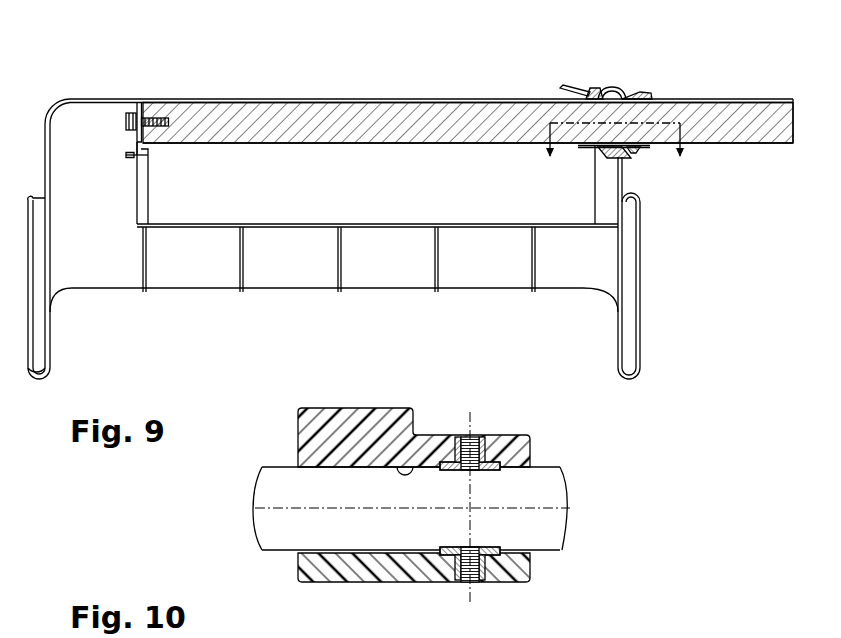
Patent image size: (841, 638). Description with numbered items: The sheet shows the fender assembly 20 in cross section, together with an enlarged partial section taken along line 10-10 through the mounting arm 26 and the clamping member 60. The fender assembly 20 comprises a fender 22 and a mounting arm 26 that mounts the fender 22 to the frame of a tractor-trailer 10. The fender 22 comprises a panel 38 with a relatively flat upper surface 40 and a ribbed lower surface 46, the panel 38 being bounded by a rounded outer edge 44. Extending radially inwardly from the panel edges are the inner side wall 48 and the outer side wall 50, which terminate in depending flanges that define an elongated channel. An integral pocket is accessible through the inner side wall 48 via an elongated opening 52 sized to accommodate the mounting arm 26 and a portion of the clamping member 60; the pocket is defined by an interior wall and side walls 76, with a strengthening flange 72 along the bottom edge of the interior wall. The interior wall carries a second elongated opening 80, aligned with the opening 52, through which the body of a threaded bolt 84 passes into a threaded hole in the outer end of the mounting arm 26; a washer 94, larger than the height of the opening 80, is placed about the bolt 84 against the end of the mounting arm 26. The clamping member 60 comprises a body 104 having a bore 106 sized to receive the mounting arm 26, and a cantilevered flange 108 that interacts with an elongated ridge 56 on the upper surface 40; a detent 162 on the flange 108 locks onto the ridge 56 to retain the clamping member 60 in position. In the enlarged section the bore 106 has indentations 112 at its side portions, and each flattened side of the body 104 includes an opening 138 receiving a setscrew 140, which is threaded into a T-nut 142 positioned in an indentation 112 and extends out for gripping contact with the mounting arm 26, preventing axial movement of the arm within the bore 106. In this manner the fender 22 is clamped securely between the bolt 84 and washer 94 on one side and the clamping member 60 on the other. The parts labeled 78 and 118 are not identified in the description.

In FIG. 9, the tractor-trailer 10 is at (614, 149).
In FIG. 9, the fender assembly 20 is at (642, 305).
In FIG. 9, the fender 22 is at (473, 97).
In FIG. 9, the mounting arm 26 is at (731, 107).
In FIG. 10, the mounting arm 26 is at (551, 533).
In FIG. 9, the panel 38 is at (369, 97).
In FIG. 9, the upper surface 40 is at (419, 97).
In FIG. 9, the outer edge 44 is at (48, 118).
In FIG. 9, the lower surface 46 is at (195, 258).
In FIG. 9, the inner side wall 48 is at (623, 172).
In FIG. 9, the outer side wall 50 is at (45, 147).
In FIG. 9, the elongated opening 52 is at (208, 145).
In FIG. 9, the elongated ridge 56 is at (598, 96).
In FIG. 9, the clamping member 60 is at (623, 86).
In FIG. 9, the strengthening flange 72 is at (132, 157).
In FIG. 9, the side walls 76 is at (352, 223).
In FIG. 9, the tray side wall 78 is at (147, 158).
In FIG. 9, the second elongated opening 80 is at (137, 141).
In FIG. 9, the threaded bolt 84 is at (125, 121).
In FIG. 9, the washer 94 is at (137, 110).
In FIG. 9, the body 104 is at (642, 96).
In FIG. 9, the bore 106 is at (632, 151).
In FIG. 10, the bore 106 is at (403, 466).
In FIG. 9, the cantilevered flange 108 is at (587, 87).
In FIG. 10, the indentations 112 is at (531, 464).
In FIG. 9, the wedge 118 is at (630, 154).
In FIG. 10, the opening 138 is at (462, 437).
In FIG. 10, the setscrew 140 is at (478, 437).
In FIG. 10, the T-nut 142 is at (501, 468).
In FIG. 9, the detent 162 is at (572, 92).